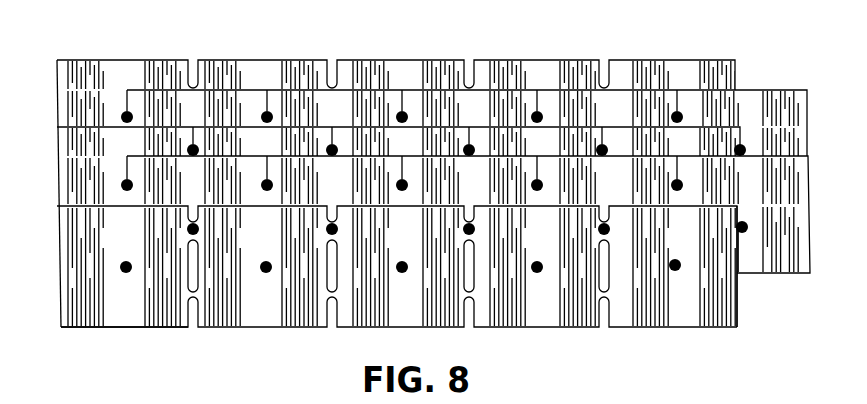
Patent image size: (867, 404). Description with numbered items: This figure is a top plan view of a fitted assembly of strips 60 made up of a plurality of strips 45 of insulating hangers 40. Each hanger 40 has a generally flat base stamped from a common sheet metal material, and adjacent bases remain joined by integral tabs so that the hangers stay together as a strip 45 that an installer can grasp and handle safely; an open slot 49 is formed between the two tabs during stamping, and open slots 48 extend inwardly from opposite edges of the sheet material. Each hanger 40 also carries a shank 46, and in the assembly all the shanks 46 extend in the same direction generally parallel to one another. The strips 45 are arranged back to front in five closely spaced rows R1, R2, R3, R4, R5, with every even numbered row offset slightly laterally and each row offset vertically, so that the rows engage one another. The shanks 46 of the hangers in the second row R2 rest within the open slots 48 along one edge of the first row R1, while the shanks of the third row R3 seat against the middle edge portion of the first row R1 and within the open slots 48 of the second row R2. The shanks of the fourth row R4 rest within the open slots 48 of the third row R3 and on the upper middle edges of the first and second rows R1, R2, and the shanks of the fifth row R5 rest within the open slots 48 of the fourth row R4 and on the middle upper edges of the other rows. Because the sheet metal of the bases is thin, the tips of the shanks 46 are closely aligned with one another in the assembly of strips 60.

The first row R1 is at (51, 267).
The second row R2 is at (818, 220).
The third row R3 is at (51, 172).
The fourth row R4 is at (810, 116).
The fifth row R5 is at (52, 82).
The hanger 40 is at (167, 308).
The strip 45 is at (91, 268).
The shank 46 is at (678, 110).
The open slot 48 is at (267, 110).
The open slot 49 is at (474, 254).
The assembly of strips 60 is at (276, 332).